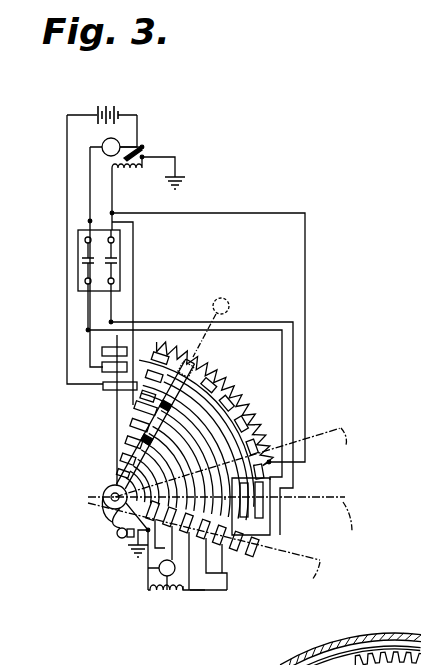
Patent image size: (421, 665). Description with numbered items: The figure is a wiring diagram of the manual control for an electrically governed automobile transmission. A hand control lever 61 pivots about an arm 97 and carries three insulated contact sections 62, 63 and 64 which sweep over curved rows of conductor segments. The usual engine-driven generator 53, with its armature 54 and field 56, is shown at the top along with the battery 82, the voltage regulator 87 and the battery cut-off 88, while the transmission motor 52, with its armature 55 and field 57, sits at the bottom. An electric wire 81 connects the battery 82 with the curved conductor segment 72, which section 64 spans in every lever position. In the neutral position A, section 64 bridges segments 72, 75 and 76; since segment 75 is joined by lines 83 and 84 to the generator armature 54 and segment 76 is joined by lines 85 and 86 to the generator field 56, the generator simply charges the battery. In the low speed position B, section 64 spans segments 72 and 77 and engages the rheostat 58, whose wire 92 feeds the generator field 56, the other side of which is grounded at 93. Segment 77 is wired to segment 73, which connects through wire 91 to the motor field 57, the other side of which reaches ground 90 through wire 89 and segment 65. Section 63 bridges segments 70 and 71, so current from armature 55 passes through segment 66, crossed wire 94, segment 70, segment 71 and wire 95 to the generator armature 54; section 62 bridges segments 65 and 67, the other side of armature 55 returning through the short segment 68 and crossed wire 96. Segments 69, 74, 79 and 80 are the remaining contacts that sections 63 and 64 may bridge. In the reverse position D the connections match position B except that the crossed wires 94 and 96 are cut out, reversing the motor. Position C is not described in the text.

The transmission motor 52 is at (150, 588).
The electric generator 53 is at (142, 147).
The armature of the generator 54 is at (115, 140).
The armature of the transmission motor 55 is at (167, 590).
The field of the generator 56 is at (122, 178).
The field of the transmission motor 57 is at (182, 592).
The rheostat 58 is at (252, 414).
The hand control lever 61 is at (120, 476).
The contact section 62 is at (124, 460).
The contact section 63 is at (150, 417).
The contact section 64 is at (200, 364).
The conductor segment 65 is at (117, 534).
The conductor segment 66 is at (158, 540).
The conductor segment 67 is at (130, 444).
The conductor segment 68 is at (186, 545).
The conductor segment 69 is at (198, 560).
The conductor segment 70 is at (135, 428).
The conductor segment 71 is at (138, 408).
The curved conductor segment 72 is at (226, 580).
The conductor segment 73 is at (238, 570).
The conductor segment 74 is at (250, 575).
The conductor segment 75 is at (248, 515).
The conductor segment 76 is at (262, 506).
The conductor segment 77 is at (222, 395).
The conductor segment 79 is at (102, 368).
The conductor segment 80 is at (102, 352).
The electric wire 81 is at (67, 188).
The battery 82 is at (100, 105).
The line 83 is at (230, 323).
The line 84 is at (88, 306).
The line 85 is at (272, 322).
The line 86 is at (112, 310).
The voltage regulator 87 is at (114, 253).
The battery cut-off 88 is at (78, 246).
The wire 89 is at (146, 566).
The ground 90 is at (133, 549).
The wire 91 is at (204, 592).
The wire 92 is at (305, 273).
The ground 93 is at (185, 180).
The crossed wire 94 is at (222, 490).
The wire 95 is at (133, 272).
The crossed wire 96 is at (122, 484).
The arm 97 is at (103, 504).
The neutral position A is at (220, 525).
The low speed position B is at (230, 462).
The contact bar C is at (119, 343).
The reverse position D is at (207, 553).